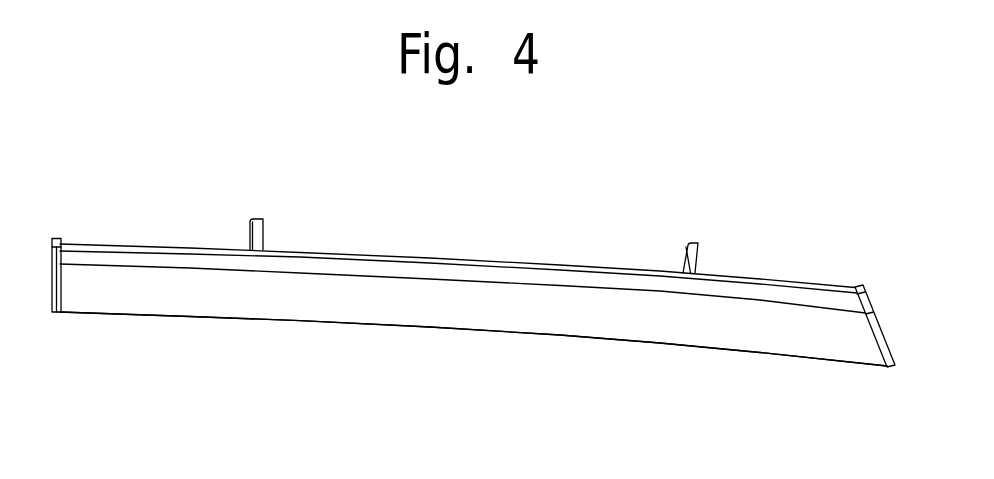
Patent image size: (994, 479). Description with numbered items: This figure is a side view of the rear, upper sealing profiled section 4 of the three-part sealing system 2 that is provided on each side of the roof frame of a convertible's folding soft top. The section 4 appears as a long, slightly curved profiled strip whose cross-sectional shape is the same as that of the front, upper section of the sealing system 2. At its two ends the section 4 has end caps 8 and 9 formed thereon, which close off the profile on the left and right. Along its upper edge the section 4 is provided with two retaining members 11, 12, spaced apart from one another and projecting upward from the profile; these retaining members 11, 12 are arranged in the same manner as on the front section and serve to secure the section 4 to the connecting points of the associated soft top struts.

The sealing system 2 is at (518, 330).
The rear, upper sealing profiled section 4 is at (341, 322).
The end cap 8 is at (54, 312).
The end cap 9 is at (888, 367).
The retaining member 11 is at (261, 219).
The retaining member 12 is at (700, 243).